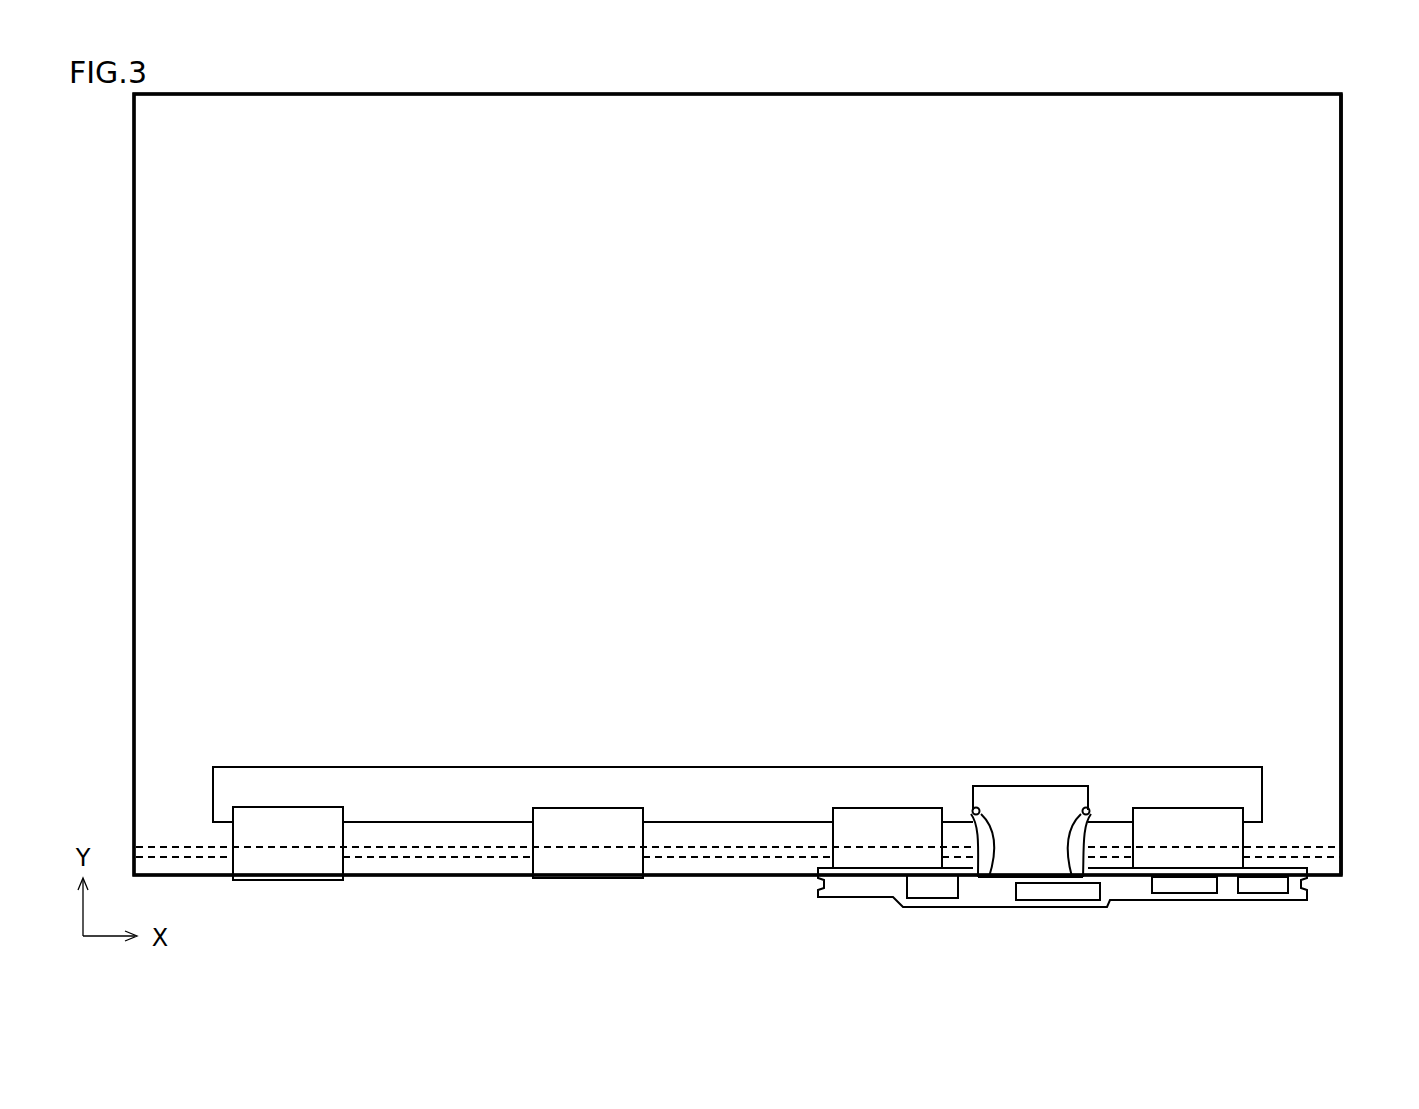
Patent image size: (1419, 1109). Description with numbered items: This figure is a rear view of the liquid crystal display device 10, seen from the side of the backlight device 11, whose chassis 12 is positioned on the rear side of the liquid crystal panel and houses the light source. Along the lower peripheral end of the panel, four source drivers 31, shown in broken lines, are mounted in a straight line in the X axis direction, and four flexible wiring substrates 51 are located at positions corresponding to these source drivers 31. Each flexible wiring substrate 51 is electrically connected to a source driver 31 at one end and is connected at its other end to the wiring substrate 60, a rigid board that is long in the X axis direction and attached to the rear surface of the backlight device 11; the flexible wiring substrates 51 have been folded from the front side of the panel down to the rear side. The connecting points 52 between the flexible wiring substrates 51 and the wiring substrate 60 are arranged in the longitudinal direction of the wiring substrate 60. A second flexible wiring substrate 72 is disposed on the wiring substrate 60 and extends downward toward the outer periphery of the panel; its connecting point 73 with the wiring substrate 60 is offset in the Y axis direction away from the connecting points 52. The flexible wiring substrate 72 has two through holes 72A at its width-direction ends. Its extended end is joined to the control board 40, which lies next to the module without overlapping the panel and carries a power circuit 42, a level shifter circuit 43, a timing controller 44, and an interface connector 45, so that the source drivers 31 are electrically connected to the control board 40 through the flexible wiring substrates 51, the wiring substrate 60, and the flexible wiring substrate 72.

The liquid crystal display device 10 is at (420, 90).
The backlight device 11 is at (1295, 215).
The chassis 12 is at (1325, 278).
The source driver 31 is at (252, 848).
The control board 40 is at (862, 885).
The power circuit 42 is at (1262, 887).
The level shifter circuit 43 is at (1188, 887).
The timing controller 44 is at (927, 893).
The interface connector 45 is at (1043, 894).
The flexible wiring substrate 51 is at (318, 875).
The connecting point 52 is at (260, 807).
The wiring substrate 60 is at (418, 803).
The flexible wiring substrate 72 is at (1175, 765).
The through hole 72A is at (985, 868).
The connecting point 73 is at (1065, 786).